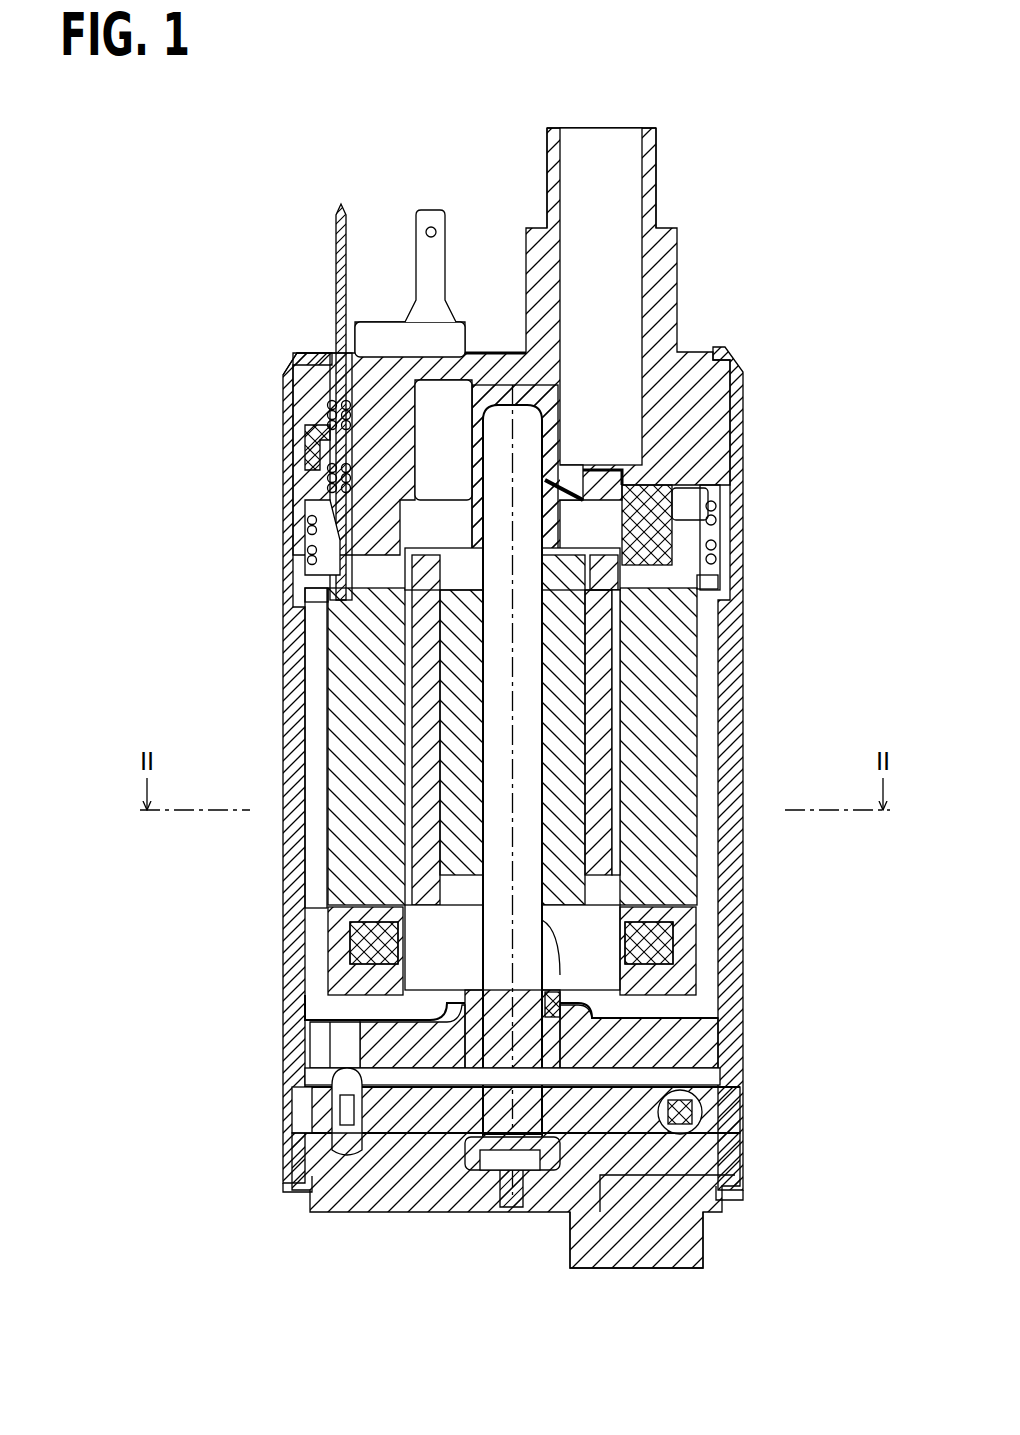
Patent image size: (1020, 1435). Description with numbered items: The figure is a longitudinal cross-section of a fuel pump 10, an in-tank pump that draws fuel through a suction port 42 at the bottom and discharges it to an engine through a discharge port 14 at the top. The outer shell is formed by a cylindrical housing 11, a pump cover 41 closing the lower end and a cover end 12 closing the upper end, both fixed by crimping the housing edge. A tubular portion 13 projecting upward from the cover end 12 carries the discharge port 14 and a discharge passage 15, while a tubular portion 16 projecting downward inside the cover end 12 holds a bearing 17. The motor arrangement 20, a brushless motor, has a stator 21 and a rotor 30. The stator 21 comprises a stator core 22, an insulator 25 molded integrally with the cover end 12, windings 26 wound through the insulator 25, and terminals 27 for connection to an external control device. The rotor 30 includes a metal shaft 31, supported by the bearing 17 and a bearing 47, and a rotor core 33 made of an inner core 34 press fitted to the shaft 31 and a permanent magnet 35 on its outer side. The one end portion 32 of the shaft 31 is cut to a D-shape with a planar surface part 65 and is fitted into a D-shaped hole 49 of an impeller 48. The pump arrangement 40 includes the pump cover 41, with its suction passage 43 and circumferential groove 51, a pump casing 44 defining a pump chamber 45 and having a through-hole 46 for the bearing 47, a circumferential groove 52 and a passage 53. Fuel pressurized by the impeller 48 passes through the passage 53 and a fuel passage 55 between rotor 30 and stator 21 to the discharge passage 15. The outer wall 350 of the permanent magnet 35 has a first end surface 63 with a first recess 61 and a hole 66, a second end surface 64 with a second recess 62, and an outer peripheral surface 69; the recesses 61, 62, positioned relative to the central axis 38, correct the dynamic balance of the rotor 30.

The fuel pump 10 is at (262, 130).
The housing 11 is at (300, 893).
The cover end 12 is at (298, 360).
The tubular portion 13 is at (660, 243).
The discharge port 14 is at (630, 127).
The discharge passage 15 is at (612, 318).
The tubular portion 16 is at (575, 462).
The bearing 17 is at (560, 494).
The motor arrangement 20 is at (225, 625).
The stator 21 is at (300, 712).
The stator core 22 is at (355, 645).
The insulator 25 is at (305, 603).
The windings 26 is at (365, 940).
The terminals 27 is at (340, 213).
The rotor 30 is at (410, 762).
The shaft 31 is at (500, 848).
The one end portion 32 is at (498, 1128).
The rotor core 33 is at (622, 650).
The inner core 34 is at (565, 790).
The permanent magnet 35 is at (598, 738).
The central axis 38 is at (490, 380).
The pump arrangement 40 is at (262, 1190).
The pump cover 41 is at (392, 1200).
The suction port 42 is at (635, 1270).
The suction passage 43 is at (672, 1195).
The pump casing 44 is at (418, 1065).
The pump chamber 45 is at (305, 1122).
The through-hole 46 is at (318, 1010).
The bearing 47 is at (560, 1035).
The impeller 48 is at (702, 1115).
The hole 49 is at (522, 1122).
The circumferential groove 51 is at (345, 1152).
The circumferential groove 52 is at (320, 1078).
The passage 53 is at (340, 1040).
The fuel passage 55 is at (615, 680).
The first recess 61 is at (330, 515).
The second recess 62 is at (570, 912).
The first end surface 63 is at (450, 470).
The second end surface 64 is at (560, 1010).
The planar surface part 65 is at (470, 1082).
The hole 66 is at (668, 520).
The outer peripheral surface 69 is at (612, 625).
The outer wall 350 is at (640, 500).